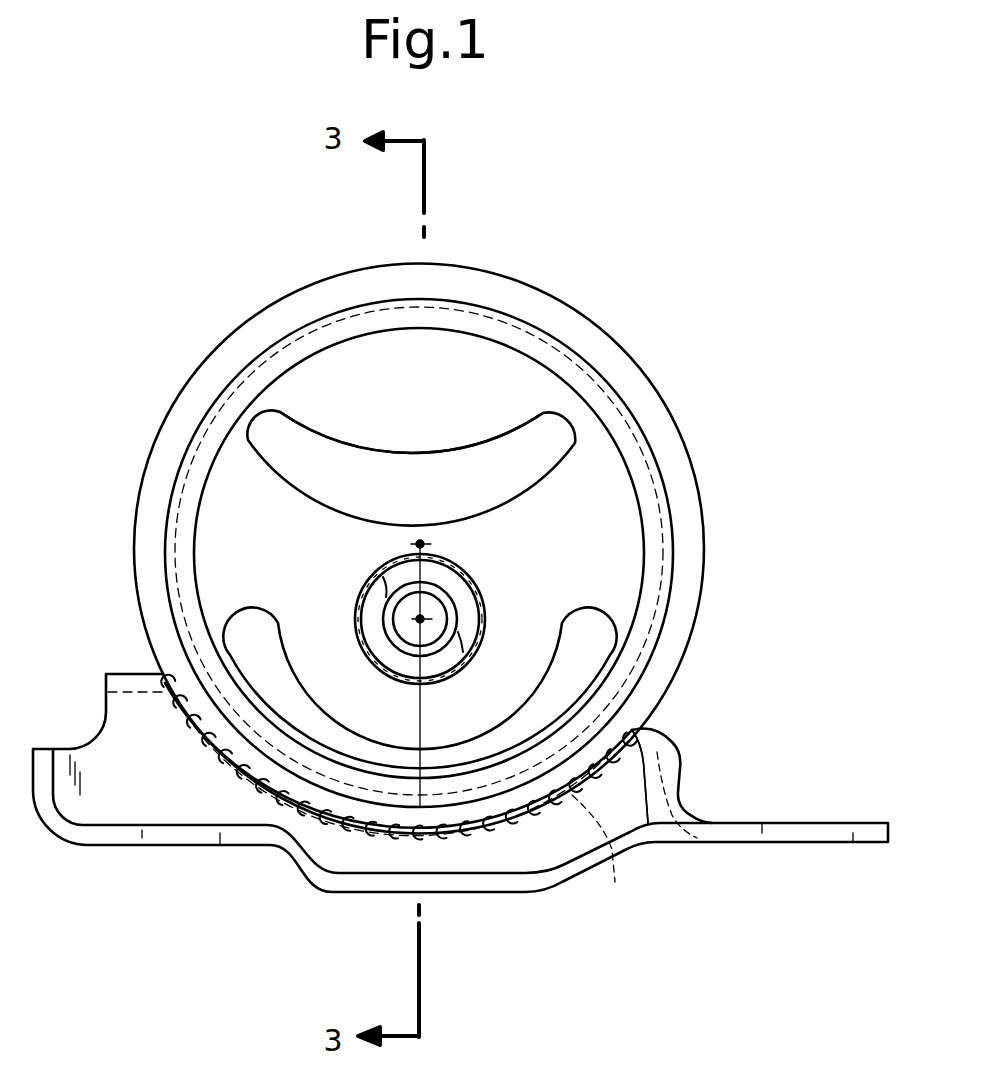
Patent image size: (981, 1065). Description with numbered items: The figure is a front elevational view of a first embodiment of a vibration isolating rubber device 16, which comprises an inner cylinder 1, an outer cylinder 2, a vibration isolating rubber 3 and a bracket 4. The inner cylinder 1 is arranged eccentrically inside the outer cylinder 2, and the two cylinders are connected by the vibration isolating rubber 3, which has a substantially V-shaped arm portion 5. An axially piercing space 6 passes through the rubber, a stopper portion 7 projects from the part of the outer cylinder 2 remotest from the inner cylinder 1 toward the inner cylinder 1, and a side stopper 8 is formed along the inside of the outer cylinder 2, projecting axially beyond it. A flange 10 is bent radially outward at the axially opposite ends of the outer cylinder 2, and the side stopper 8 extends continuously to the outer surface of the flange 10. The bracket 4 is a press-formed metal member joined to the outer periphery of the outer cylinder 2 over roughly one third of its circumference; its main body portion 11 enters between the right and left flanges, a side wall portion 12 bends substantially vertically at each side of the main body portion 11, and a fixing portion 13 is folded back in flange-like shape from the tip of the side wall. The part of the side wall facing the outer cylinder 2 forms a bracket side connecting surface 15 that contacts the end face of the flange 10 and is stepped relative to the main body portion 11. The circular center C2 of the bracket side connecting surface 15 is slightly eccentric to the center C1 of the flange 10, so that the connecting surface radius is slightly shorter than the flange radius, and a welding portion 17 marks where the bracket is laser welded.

The inner cylinder 1 is at (477, 592).
The outer cylinder 2 is at (583, 372).
The vibration isolating rubber 3 is at (616, 463).
The bracket 4 is at (181, 845).
The arm portion 5 is at (558, 618).
The axially piercing space 6 is at (345, 487).
The stopper portion 7 is at (378, 440).
The side stopper 8 is at (470, 305).
The flange 10 is at (254, 352).
The main body portion 11 is at (604, 864).
The side wall portion 12 is at (347, 830).
The fixing portion 13 is at (477, 880).
The bracket side connecting surface 15 is at (502, 828).
The vibration isolating mount 16 is at (160, 414).
The welding portion 17 is at (648, 823).
The center of the flange C1 is at (421, 540).
The circular center of the bracket side connecting surface C2 is at (422, 616).